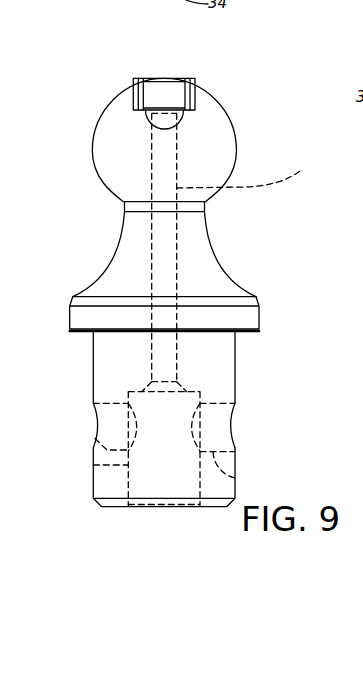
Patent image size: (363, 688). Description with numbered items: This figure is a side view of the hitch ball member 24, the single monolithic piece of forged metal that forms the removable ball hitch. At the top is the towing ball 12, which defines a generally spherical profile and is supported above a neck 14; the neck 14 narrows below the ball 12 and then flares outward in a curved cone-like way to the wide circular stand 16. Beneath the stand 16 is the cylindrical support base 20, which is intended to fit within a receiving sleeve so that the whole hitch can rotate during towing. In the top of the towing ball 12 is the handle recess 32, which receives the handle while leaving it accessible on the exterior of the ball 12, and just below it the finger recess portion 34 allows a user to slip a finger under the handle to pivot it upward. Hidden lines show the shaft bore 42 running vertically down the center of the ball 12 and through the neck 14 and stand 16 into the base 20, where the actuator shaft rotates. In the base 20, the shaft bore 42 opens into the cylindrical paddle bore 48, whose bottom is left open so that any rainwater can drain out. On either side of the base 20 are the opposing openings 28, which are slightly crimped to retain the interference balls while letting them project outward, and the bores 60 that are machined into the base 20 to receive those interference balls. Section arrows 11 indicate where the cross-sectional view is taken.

The section line 11- 11 is at (165, 70).
The towing ball portion 12 is at (225, 153).
The neck 14 is at (195, 217).
The stand 16 is at (250, 318).
The support base 20 is at (222, 365).
The ball hitch member 24 is at (56, 140).
The openings 28 is at (95, 422).
The handle recess 32 is at (163, 93).
The finger recess portion 34 is at (165, 118).
The shaft bore 42 is at (246, 169).
The paddle bore 48 is at (93, 465).
The bores for the interference balls 60 is at (95, 438).